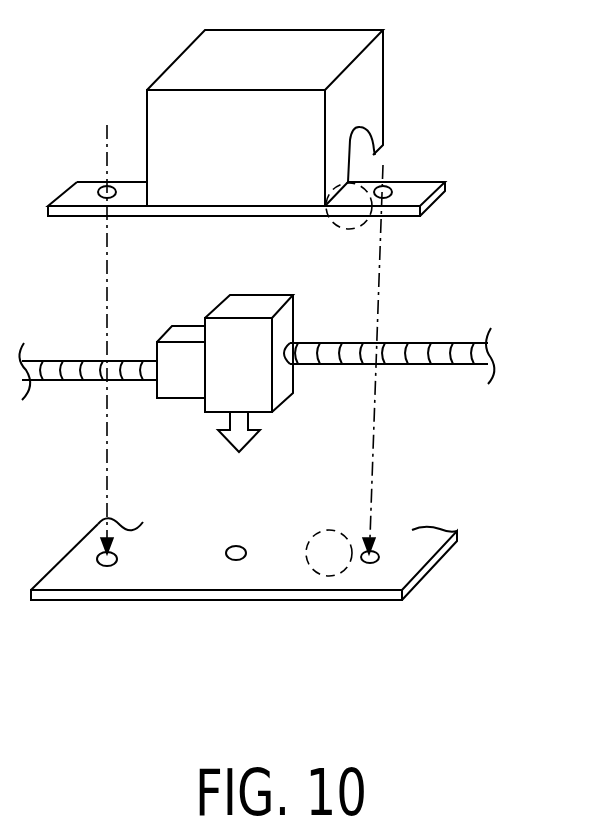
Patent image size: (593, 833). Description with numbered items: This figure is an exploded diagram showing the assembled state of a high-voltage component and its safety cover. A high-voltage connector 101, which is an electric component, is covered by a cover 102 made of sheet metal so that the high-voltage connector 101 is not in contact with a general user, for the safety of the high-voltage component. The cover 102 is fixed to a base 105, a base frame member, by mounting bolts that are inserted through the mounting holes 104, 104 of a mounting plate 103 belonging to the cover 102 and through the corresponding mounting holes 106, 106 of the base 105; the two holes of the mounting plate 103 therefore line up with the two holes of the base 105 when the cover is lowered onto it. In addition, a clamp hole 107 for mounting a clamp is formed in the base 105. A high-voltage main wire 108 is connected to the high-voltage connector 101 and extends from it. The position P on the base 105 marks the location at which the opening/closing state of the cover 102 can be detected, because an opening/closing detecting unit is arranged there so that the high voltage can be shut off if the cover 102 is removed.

The high-voltage connector 101 is at (229, 303).
The cover 102 is at (373, 65).
The mounting plate 103 is at (435, 182).
The mounting holes 104 is at (100, 189).
The base 105 is at (415, 558).
The mounting holes 106 is at (110, 566).
The clamp hole 107 is at (234, 561).
The high-voltage main wire 108 is at (447, 343).
The position P is at (343, 229).